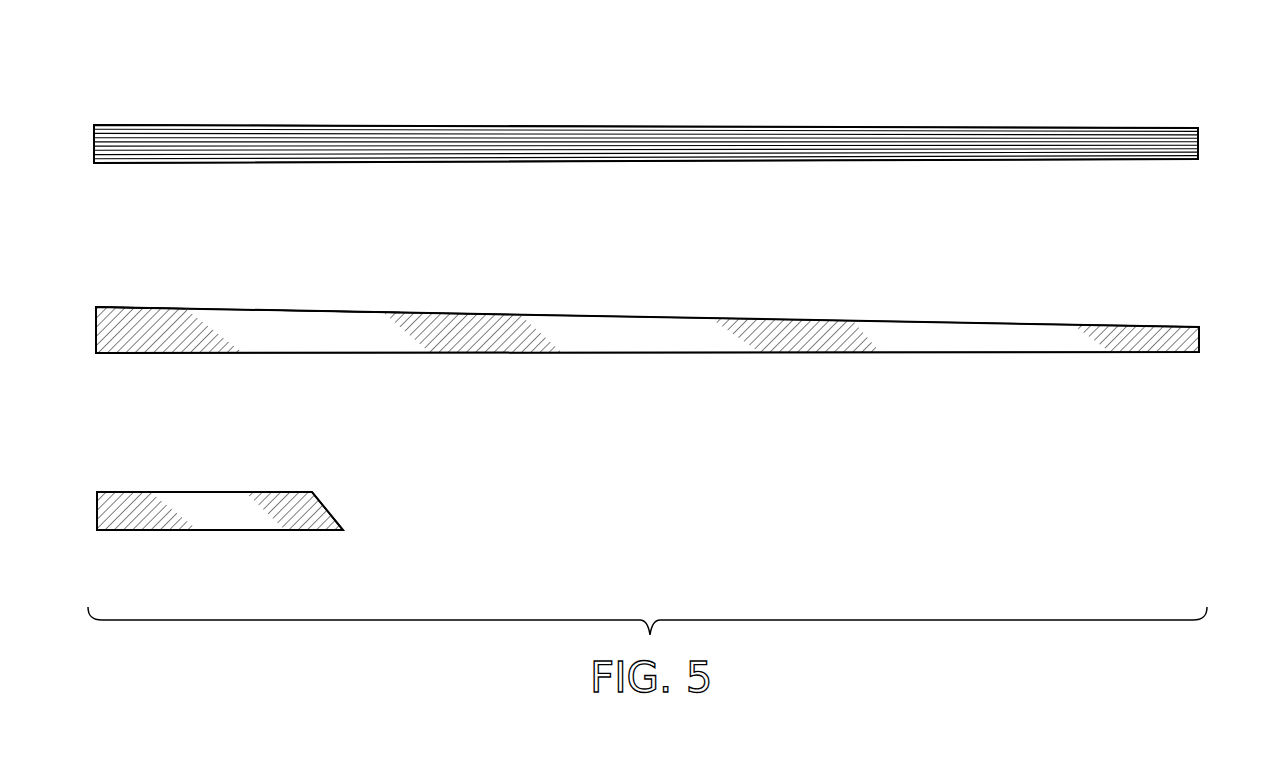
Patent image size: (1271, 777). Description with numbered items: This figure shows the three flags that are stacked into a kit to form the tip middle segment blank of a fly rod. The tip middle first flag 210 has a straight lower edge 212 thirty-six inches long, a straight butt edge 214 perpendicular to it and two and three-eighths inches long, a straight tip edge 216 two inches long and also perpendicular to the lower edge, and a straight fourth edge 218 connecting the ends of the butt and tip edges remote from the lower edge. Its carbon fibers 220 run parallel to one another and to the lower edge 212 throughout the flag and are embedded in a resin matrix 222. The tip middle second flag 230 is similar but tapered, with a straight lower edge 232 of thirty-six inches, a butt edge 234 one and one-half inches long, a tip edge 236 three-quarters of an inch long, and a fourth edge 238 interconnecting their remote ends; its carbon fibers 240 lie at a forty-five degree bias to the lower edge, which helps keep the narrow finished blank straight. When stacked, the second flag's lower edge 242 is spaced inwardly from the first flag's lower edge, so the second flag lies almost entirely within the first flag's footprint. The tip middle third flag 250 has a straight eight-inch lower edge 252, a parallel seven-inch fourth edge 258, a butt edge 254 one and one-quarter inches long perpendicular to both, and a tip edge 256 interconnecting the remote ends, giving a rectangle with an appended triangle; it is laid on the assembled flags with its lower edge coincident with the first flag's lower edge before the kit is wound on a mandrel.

The tip middle first flag 210 is at (613, 118).
The lower edge 212 is at (737, 162).
The butt edge 214 is at (95, 147).
The tip edge 216 is at (1198, 145).
The fourth edge 218 is at (922, 128).
The carbon fibers 220 is at (147, 145).
The resin matrix 222 is at (313, 145).
The tip middle second flag 230 is at (615, 308).
The lower edge 232 is at (738, 355).
The butt edge 234 is at (96, 335).
The tip edge 236 is at (1200, 338).
The fourth edge 238 is at (922, 322).
The carbon fibers 240 is at (147, 335).
The lower edge 242 is at (313, 335).
The tip middle third flag 250 is at (170, 482).
The lower edge 252 is at (218, 532).
The butt edge 254 is at (97, 517).
The tip edge 256 is at (323, 510).
The fourth edge 258 is at (267, 492).